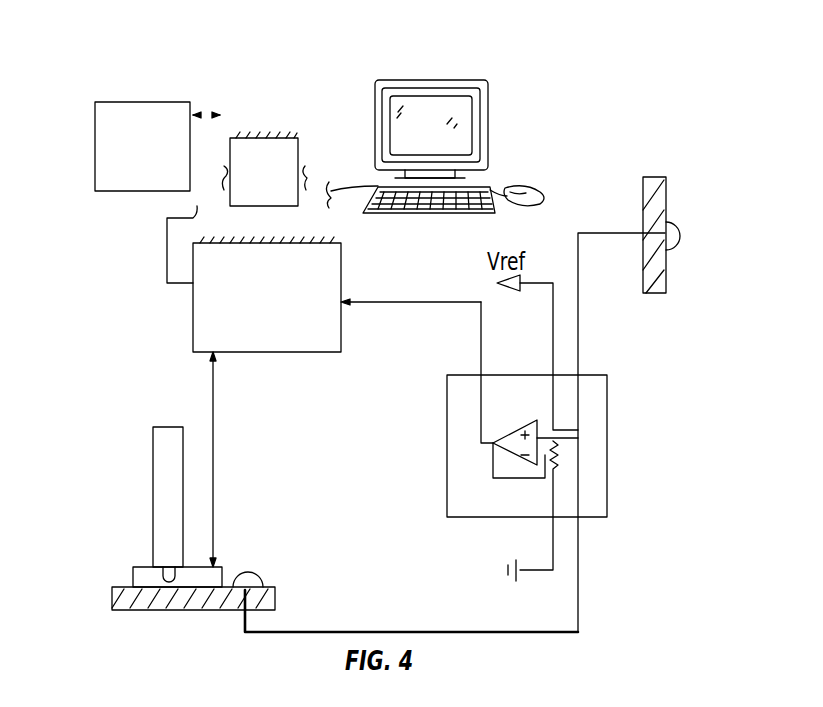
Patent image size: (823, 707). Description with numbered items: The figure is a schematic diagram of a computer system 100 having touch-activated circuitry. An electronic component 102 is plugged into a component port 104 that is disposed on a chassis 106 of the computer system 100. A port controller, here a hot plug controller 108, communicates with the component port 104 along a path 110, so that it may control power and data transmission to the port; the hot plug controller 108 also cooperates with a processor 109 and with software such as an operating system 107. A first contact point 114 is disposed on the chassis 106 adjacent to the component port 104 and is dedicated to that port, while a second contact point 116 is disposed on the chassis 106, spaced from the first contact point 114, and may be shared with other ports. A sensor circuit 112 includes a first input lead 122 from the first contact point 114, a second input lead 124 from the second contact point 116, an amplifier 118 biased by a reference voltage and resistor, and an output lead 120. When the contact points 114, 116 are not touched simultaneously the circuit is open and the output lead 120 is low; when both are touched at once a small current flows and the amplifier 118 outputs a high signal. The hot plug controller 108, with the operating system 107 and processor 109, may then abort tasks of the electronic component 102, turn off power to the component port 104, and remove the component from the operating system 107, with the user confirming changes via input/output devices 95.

The computer system 100 is at (670, 100).
The input/output devices 95 is at (500, 155).
The electronic component 102 is at (153, 460).
The component port 104 is at (133, 573).
The chassis 106 is at (668, 256).
The operating system 107 is at (92, 145).
The hot plug controller 108 is at (282, 354).
The processor 109 is at (302, 148).
The path 110 is at (216, 462).
The sensor circuit 112 is at (612, 442).
The first contact point 114 is at (248, 575).
The second contact point 116 is at (680, 236).
The amplifier 118 is at (489, 462).
The output lead 120 is at (478, 318).
The first input lead 122 is at (375, 630).
The second input lead 124 is at (581, 343).